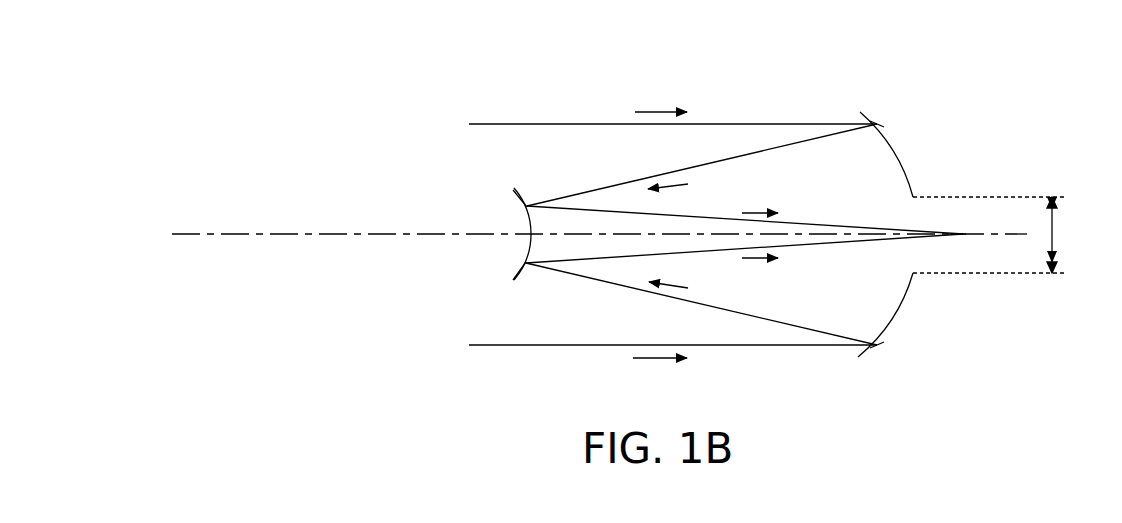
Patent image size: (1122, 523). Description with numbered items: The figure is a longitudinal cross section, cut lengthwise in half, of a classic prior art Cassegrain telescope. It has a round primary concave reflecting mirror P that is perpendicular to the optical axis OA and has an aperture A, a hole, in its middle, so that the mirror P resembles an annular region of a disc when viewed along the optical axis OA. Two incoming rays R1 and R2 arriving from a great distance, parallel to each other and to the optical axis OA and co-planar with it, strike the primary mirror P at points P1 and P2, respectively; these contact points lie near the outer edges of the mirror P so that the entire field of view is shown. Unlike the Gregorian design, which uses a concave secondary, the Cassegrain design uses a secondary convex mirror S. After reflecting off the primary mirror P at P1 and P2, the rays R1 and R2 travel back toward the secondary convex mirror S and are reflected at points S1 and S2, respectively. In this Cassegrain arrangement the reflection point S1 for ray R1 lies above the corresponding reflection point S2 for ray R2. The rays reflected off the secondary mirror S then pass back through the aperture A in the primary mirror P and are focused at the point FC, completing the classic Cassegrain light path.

The optical axis OA is at (268, 232).
The incoming ray R1 is at (560, 123).
The incoming ray R2 is at (814, 246).
The secondary convex mirror S is at (521, 217).
The reflection point on secondary mirror for R1 S1 is at (525, 205).
The reflection point on secondary mirror for R2 S2 is at (525, 265).
The primary concave reflecting mirror P is at (905, 160).
The reflection point on primary mirror for R1 P1 is at (880, 124).
The reflection point on primary mirror for R2 P2 is at (880, 345).
The focus point FC is at (982, 220).
The aperture A is at (1060, 237).